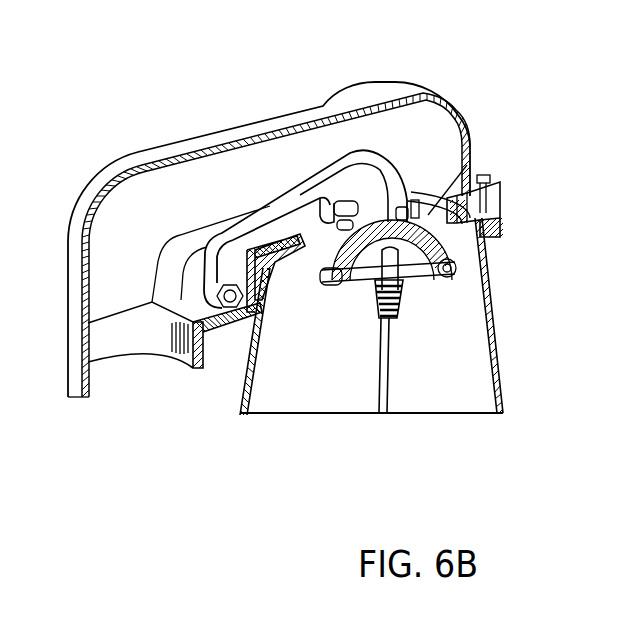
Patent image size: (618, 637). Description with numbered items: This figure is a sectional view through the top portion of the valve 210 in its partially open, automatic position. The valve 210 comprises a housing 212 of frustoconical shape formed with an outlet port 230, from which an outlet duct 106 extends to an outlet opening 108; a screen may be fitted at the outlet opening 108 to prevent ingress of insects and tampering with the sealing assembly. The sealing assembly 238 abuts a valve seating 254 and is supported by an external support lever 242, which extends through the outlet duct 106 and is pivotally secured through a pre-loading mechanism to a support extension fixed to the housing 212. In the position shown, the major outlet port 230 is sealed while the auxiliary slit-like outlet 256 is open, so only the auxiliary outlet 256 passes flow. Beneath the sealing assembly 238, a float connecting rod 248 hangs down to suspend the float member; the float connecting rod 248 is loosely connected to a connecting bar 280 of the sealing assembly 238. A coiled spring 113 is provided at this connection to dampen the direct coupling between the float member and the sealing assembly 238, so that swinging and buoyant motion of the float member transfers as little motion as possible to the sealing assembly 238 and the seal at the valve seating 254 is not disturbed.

The outlet duct 106 is at (158, 157).
The outlet opening 108 is at (134, 356).
The coiled spring 113 is at (404, 300).
The valve 210 is at (196, 424).
The housing 212 is at (500, 393).
The outlet port 230 is at (470, 160).
The sealing assembly 238 is at (424, 176).
The external support lever 242 is at (276, 222).
The float connecting rod 248 is at (384, 372).
The valve seating 254 is at (503, 233).
The auxiliary outlet 256 is at (500, 193).
The connecting bar 280 is at (432, 276).